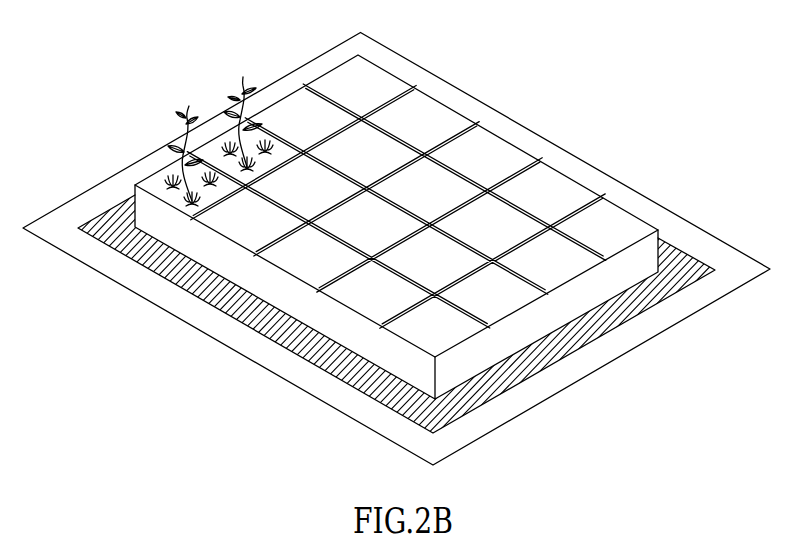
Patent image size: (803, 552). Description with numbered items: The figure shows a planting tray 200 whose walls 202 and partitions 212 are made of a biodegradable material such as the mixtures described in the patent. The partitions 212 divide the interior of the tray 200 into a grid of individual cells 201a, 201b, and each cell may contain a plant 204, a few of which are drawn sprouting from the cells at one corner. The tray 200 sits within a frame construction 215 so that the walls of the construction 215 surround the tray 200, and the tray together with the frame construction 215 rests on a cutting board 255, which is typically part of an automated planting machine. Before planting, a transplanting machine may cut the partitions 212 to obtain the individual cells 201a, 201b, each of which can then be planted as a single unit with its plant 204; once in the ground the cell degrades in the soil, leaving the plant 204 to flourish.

The tray 200 is at (396, 219).
The individual cell 201a is at (217, 147).
The individual cell 201b is at (153, 187).
The plant 204 is at (188, 111).
The partitions 212 is at (582, 242).
The walls 202 is at (647, 252).
The cutting board 255 is at (143, 279).
The frame construction 215 is at (255, 313).